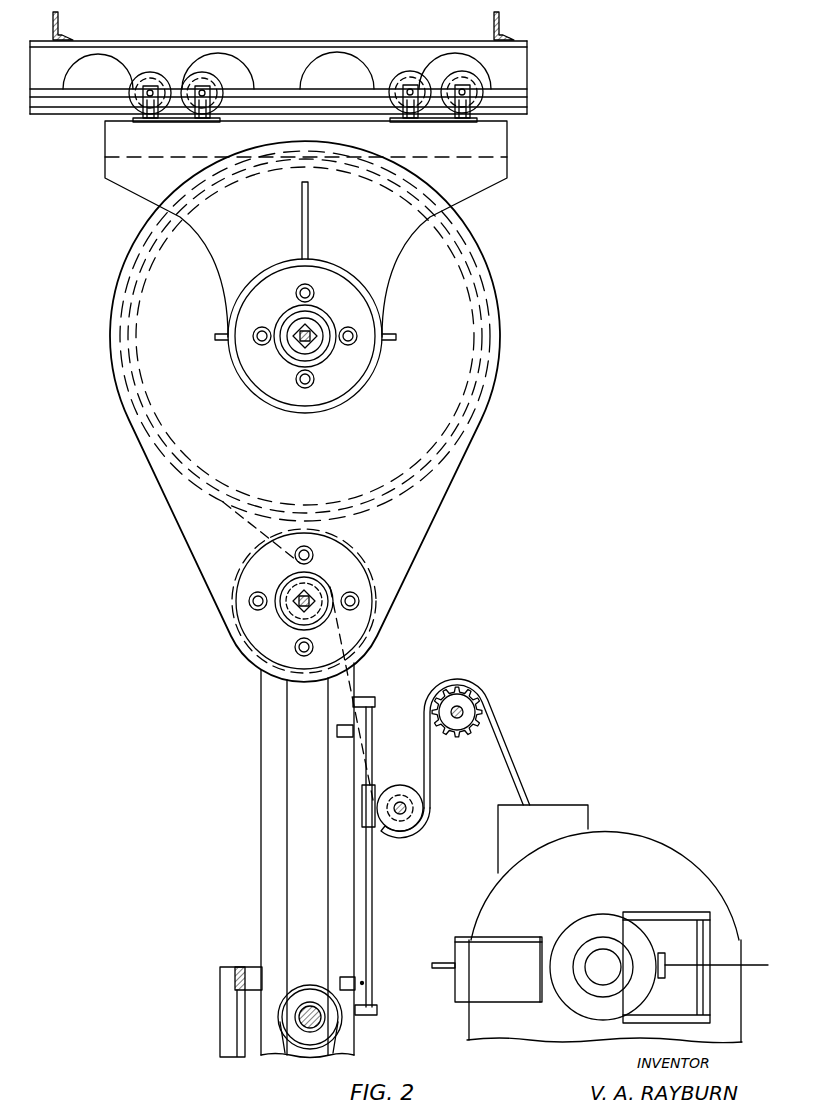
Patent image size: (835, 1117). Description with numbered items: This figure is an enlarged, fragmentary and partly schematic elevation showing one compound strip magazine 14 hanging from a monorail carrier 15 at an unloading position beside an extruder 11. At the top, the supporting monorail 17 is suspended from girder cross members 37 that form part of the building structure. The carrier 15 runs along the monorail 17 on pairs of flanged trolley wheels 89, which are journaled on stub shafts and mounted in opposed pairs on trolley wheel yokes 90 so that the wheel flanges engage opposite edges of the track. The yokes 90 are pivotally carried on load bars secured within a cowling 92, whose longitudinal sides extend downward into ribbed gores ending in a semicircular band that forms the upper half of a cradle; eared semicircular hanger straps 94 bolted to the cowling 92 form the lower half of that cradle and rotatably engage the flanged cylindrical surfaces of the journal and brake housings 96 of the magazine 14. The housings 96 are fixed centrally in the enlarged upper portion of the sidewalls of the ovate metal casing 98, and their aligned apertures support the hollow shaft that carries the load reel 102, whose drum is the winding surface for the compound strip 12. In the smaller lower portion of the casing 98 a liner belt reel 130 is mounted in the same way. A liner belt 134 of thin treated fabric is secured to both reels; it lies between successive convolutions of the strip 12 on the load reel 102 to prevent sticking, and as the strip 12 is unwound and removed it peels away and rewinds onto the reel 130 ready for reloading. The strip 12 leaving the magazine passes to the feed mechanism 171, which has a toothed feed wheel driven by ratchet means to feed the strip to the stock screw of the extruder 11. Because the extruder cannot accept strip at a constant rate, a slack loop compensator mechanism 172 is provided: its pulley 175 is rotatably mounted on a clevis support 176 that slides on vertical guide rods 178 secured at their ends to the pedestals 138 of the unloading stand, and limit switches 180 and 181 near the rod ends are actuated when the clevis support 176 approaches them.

The extruder 11 is at (666, 855).
The compound strip 12 is at (515, 752).
The compound strip magazine 14 is at (500, 296).
The monorail carrier 15 is at (512, 160).
The monorail 17 is at (513, 104).
The girder cross member 37 is at (60, 19).
The flanged trolley wheel 89 is at (200, 74).
The trolley wheel yoke 90 is at (200, 120).
The cowling 92 is at (105, 157).
The hanger strap 94 is at (370, 396).
The journal and brake housing 96 is at (262, 400).
The ovate metal casing 98 is at (455, 489).
The load reel 102 is at (492, 366).
The liner belt reel 130 is at (283, 620).
The liner belt 134 is at (262, 535).
The pedestal 138 is at (262, 880).
The feed mechanism 171 is at (478, 680).
The slack loop compensator mechanism 172 is at (414, 841).
The pulley 175 is at (405, 790).
The clevis support 176 is at (361, 815).
The guide rod 178 is at (373, 908).
The limit switch 180 is at (340, 978).
The limit switch 181 is at (337, 733).